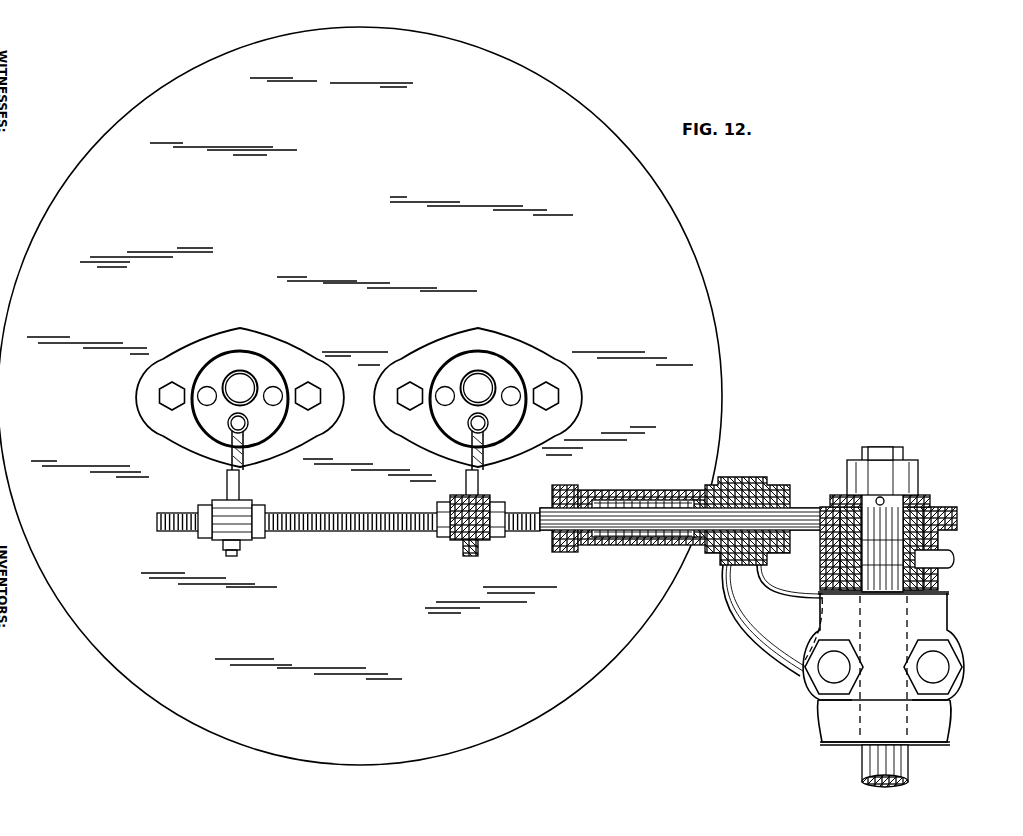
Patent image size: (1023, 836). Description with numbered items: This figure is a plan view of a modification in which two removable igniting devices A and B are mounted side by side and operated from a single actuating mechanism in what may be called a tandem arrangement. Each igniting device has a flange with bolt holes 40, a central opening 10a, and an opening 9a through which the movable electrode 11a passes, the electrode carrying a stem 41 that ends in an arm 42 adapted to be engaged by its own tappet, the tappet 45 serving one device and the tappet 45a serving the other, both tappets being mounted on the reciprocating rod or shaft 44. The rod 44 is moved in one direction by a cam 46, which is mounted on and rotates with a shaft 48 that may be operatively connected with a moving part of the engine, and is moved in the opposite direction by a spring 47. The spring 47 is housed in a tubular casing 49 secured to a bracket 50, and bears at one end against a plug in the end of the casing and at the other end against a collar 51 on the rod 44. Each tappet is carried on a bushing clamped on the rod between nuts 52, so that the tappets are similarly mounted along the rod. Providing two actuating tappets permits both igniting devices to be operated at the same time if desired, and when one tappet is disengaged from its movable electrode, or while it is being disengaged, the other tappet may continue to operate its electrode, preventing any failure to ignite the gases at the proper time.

The removable igniting device A is at (480, 330).
The removable igniting device B is at (242, 330).
The holes 40 is at (207, 387).
The central opening 10a is at (359, 388).
The valve stem opening 9a is at (347, 423).
The valve stem 11a is at (374, 422).
The valve stem bar 41 is at (245, 442).
The arm of the movable electrode 42 is at (240, 477).
The reciprocating rod or shaft 44 is at (360, 532).
The tappet 45 is at (466, 486).
The tappet 45a is at (226, 488).
The nuts 52 is at (444, 538).
The tubular casing 49 is at (641, 489).
The spring 47 is at (628, 541).
The collar 51 is at (711, 548).
The cam 46 is at (958, 521).
The bracket 50 is at (772, 620).
The shaft 48 is at (862, 767).